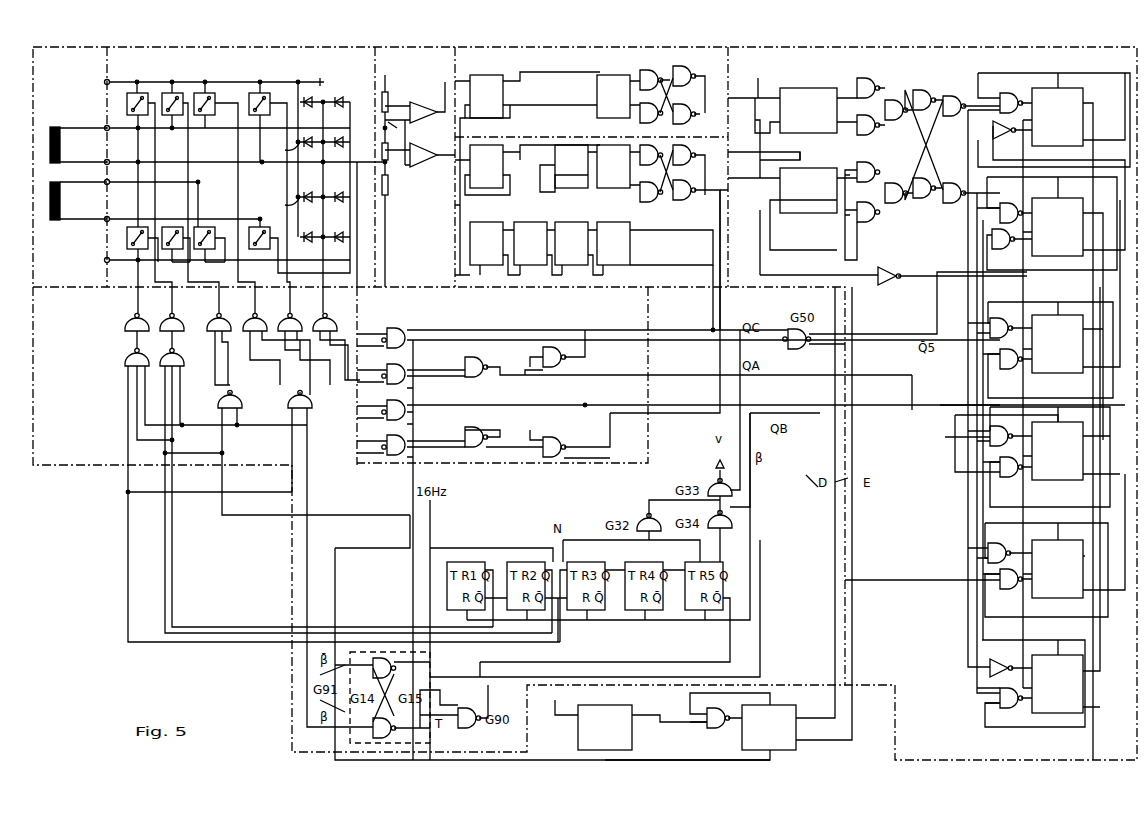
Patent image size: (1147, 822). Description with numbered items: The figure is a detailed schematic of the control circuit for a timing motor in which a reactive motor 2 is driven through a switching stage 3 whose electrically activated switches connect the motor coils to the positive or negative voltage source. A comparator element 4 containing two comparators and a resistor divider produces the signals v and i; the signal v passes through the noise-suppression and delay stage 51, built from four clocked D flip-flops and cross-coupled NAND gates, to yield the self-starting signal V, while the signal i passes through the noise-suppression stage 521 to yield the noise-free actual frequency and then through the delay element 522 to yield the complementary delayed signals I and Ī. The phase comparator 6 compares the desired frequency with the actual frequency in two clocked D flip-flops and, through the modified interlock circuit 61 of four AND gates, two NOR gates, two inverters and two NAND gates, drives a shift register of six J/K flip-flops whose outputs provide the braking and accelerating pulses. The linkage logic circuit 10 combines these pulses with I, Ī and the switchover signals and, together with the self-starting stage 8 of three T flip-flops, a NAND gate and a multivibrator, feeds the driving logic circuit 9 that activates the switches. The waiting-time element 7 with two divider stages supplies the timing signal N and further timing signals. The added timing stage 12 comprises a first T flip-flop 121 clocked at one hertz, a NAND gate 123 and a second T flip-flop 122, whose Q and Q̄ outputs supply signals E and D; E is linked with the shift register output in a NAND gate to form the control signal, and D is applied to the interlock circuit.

The reactive motor 2 is at (76, 173).
The switching stage 3 is at (247, 181).
The comparator element 4 is at (416, 173).
The noise-suppression and delay stage 51 is at (587, 180).
The noise-suppression stage 521 is at (587, 191).
The delay element 522 is at (584, 240).
The phase comparator 6 is at (929, 395).
The interlock circuit 61 is at (970, 58).
The driving logic circuit 9 is at (303, 506).
The linkage logic circuit 10 is at (678, 475).
The timing stage 12 is at (710, 525).
The T flip-flop 121 is at (612, 710).
The T flip-flop 122 is at (775, 704).
The NAND gate 123 is at (730, 722).
The waiting-time element 7 is at (728, 523).
The self-starting stage 8 is at (728, 523).